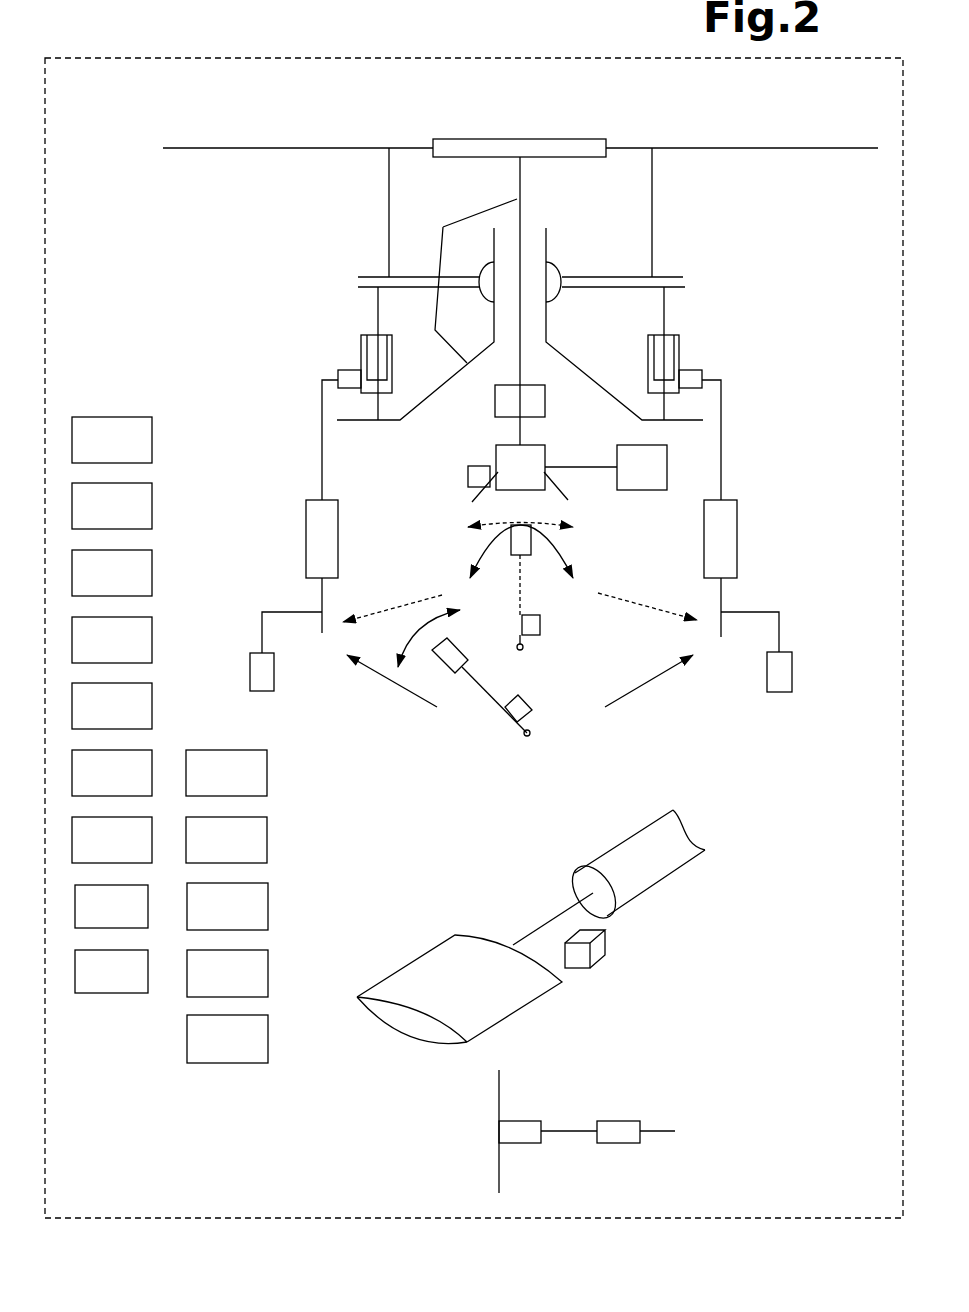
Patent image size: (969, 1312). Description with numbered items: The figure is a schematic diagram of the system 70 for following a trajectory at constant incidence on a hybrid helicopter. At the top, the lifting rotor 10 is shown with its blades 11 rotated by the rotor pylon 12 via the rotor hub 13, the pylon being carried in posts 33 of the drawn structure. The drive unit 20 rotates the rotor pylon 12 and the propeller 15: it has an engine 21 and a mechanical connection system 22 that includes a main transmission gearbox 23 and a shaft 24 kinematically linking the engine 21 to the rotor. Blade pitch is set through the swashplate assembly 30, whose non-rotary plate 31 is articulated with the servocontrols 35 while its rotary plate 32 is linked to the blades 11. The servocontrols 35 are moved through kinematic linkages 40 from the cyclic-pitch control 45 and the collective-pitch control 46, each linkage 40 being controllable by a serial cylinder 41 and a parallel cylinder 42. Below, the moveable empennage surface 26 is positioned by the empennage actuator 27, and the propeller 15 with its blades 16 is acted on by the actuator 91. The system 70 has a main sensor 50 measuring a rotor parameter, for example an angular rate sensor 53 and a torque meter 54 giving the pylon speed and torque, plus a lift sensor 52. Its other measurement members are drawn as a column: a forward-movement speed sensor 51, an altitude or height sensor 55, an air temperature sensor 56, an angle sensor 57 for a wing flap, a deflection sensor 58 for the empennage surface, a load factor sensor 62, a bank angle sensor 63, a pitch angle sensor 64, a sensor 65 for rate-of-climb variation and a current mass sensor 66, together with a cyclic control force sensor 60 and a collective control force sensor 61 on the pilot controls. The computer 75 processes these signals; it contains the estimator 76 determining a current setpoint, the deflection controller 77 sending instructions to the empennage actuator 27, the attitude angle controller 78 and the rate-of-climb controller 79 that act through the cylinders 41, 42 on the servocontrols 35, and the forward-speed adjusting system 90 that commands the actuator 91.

The lifting rotor 10 is at (355, 130).
The blades 11 is at (800, 148).
The rotor pylon 12 is at (521, 175).
The rotor hub 13 is at (457, 157).
The propeller 15 is at (485, 1132).
The blades 16 is at (500, 1165).
The drive unit 20 is at (560, 445).
The engine 21 is at (642, 467).
The mechanical connection system 22 is at (600, 495).
The main transmission gearbox 23 is at (520, 473).
The shaft 24 is at (603, 467).
The moveable empennage surface 26 is at (428, 952).
The empennage actuator 27 is at (648, 874).
The swashplate assembly 30 is at (738, 282).
The non-rotary plate 31 is at (675, 287).
The rotary plate 32 is at (675, 278).
The post 33 is at (389, 195).
The servocontrols 35 is at (350, 345).
The kinematic linkages 40 is at (293, 472).
The serial cylinder 41 is at (306, 525).
The parallel cylinder 42 is at (265, 672).
The cyclic-pitch control 45 is at (592, 540).
The collective-pitch control 46 is at (473, 710).
The main sensor 50 is at (497, 419).
The forward-movement speed sensor 51 is at (112, 440).
The lift sensor 52 is at (466, 476).
The rotational speed sensor 53 is at (545, 385).
The torque meter 54 is at (495, 385).
The altitude or height sensor 55 is at (112, 506).
The air temperature sensor 56 is at (112, 573).
The angle sensor 57 is at (112, 640).
The deflection sensor 58 is at (598, 955).
The cyclic control force sensor 60 is at (540, 622).
The collective control force sensor 61 is at (520, 705).
The load factor sensor 62 is at (112, 706).
The bank angle sensor 63 is at (112, 773).
The pitch angle sensor 64 is at (112, 840).
The sensor 65 is at (111, 906).
The current mass sensor 66 is at (111, 971).
The system for following a trajectory at constant incidence 70 is at (180, 1110).
The computer 75 is at (156, 1000).
The estimator 76 is at (226, 773).
The deflection controller 77 is at (226, 840).
The system for adjusting an attitude angle 78 is at (227, 906).
The system for adjusting a rate of climb 79 is at (227, 973).
The system for adjusting a forward-movement speed 90 is at (227, 1039).
The actuator 91 is at (612, 1130).